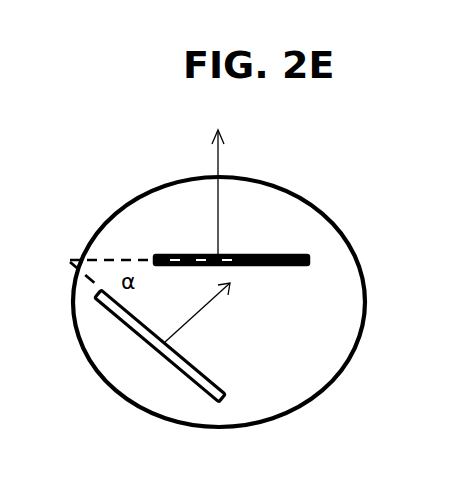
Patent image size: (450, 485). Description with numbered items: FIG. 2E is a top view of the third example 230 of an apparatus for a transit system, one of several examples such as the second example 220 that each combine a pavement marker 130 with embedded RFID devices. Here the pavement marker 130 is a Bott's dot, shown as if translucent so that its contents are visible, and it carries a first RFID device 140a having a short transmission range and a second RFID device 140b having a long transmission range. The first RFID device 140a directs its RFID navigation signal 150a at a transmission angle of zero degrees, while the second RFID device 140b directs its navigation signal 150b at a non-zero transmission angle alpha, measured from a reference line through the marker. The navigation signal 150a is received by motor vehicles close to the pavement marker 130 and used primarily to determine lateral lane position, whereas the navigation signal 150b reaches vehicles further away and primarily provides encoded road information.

The third example apparatus 230 is at (329, 195).
The second example apparatus 220 is at (17, 132).
The pavement marker 130 is at (97, 232).
The first RFID device 140a is at (238, 254).
The second RFID device 140b is at (216, 385).
The RFID navigation signal 150a is at (217, 159).
The navigation signal 150b is at (207, 304).